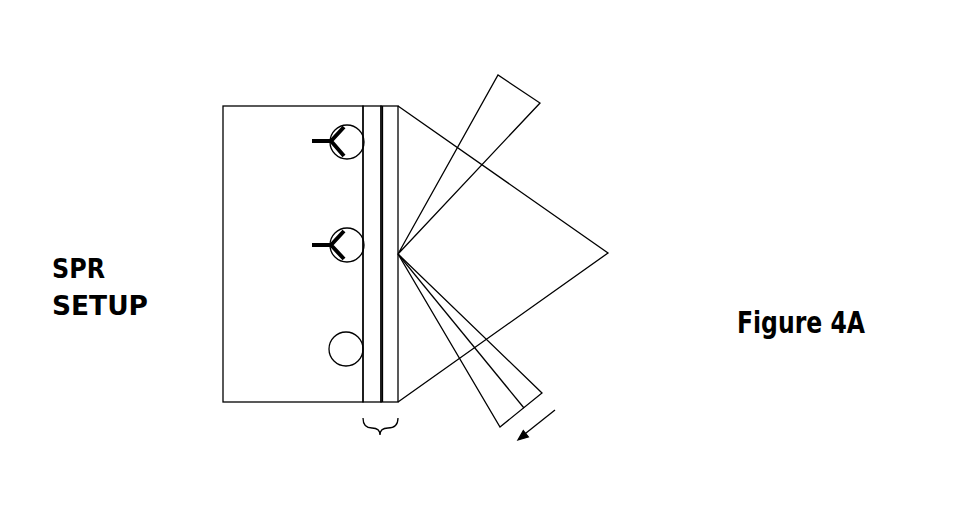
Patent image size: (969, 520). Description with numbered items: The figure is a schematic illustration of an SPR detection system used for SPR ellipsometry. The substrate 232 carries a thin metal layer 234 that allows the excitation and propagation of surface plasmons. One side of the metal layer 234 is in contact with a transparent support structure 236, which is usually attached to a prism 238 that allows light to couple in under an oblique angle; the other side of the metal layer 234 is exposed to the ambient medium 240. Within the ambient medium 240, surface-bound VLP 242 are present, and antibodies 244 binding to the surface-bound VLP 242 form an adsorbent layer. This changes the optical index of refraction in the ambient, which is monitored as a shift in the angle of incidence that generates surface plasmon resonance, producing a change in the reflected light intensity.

The substrate 232 is at (380, 435).
The metal layer 234 is at (372, 108).
The transparent support structure 236 is at (386, 107).
The prism 238 is at (570, 242).
The ambient medium 240 is at (268, 110).
The surface-bound VLP 242 is at (329, 351).
The antibodies 244 is at (310, 243).